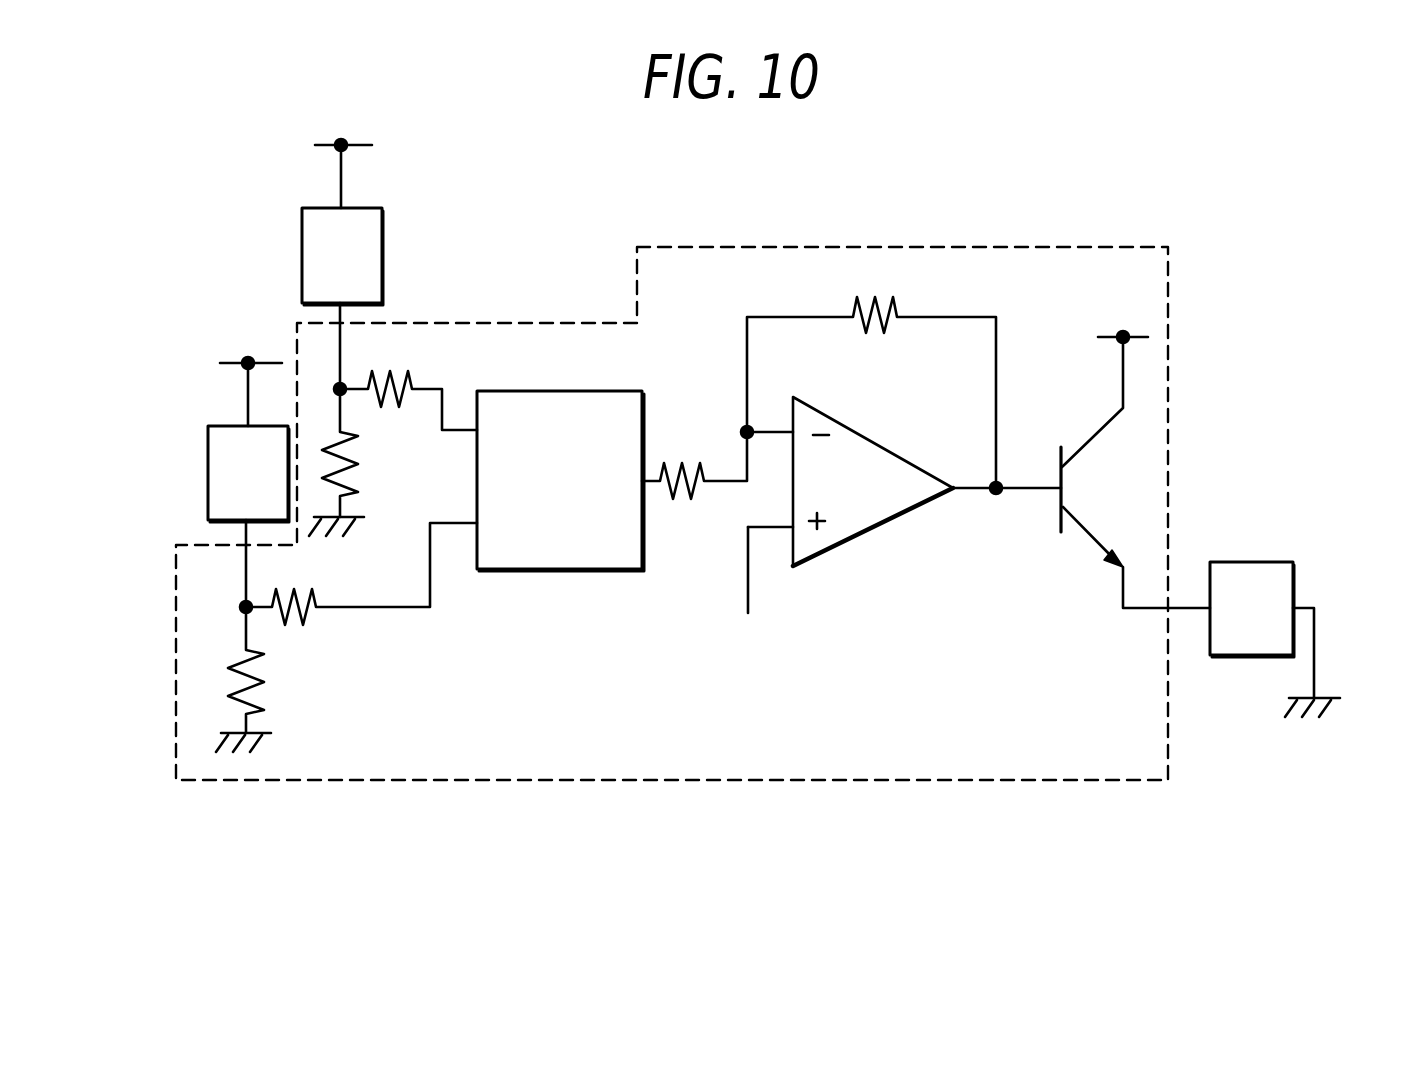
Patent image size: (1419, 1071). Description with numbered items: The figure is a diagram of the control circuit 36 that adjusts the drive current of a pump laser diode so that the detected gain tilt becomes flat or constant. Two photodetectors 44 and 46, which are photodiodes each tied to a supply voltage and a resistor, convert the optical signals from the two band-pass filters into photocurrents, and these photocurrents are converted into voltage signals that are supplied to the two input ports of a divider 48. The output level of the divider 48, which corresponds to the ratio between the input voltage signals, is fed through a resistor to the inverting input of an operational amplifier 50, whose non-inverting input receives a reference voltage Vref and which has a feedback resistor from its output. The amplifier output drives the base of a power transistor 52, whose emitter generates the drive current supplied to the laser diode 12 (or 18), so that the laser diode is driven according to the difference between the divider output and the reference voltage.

The control circuit 36 is at (785, 243).
The photodetector 44 is at (360, 208).
The photodetector 46 is at (208, 482).
The divider 48 is at (536, 391).
The operational amplifier 50 is at (847, 425).
The power transistor 52 is at (1055, 508).
The laser diode 12 is at (1305, 612).
The laser diode 18 is at (1270, 562).